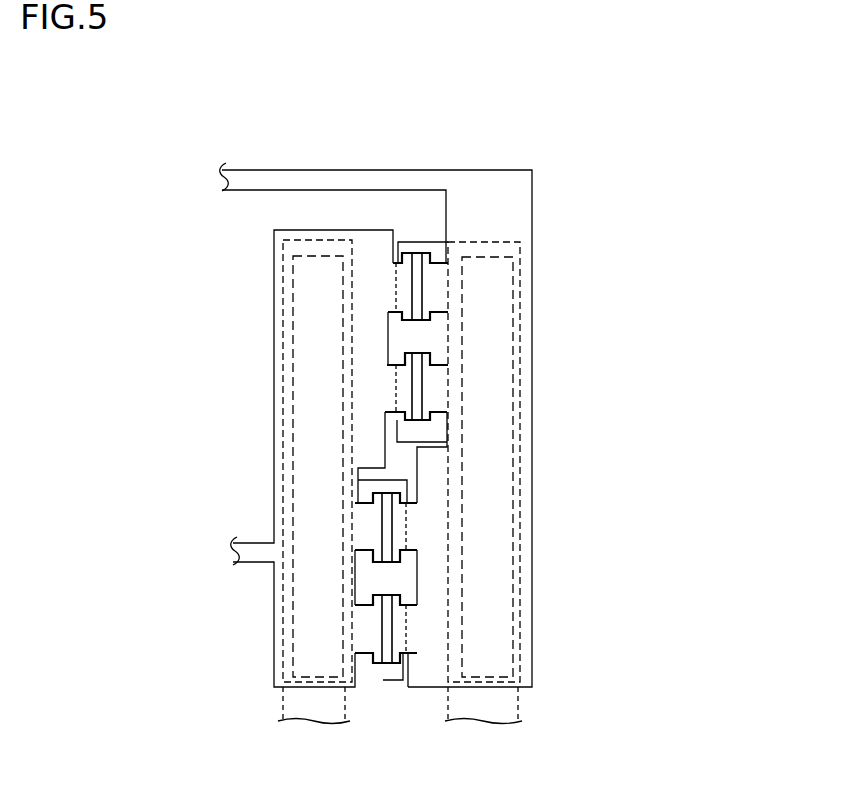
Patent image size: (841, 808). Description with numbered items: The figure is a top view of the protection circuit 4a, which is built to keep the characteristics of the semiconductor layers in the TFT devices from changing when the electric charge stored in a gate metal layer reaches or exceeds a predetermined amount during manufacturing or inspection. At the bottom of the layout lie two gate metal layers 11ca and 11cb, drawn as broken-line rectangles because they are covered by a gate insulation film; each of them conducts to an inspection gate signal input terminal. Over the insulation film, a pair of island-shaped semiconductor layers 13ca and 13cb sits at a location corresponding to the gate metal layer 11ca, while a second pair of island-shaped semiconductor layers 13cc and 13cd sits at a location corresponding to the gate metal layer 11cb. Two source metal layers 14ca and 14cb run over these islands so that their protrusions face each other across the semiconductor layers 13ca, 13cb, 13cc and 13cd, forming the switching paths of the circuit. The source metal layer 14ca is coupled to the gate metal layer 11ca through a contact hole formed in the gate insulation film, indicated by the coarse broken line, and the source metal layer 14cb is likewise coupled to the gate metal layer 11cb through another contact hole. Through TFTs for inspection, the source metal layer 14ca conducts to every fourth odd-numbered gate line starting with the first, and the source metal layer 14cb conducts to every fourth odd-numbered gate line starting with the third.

The protection circuit 4a is at (212, 112).
The source metal layer 14ca is at (354, 170).
The source metal layer 14cb is at (245, 542).
The semiconductor layer 13ca is at (417, 320).
The semiconductor layer 13cb is at (415, 418).
The semiconductor layer 13cc is at (387, 562).
The semiconductor layer 13cd is at (383, 665).
The gate metal layer 11ca is at (485, 721).
The gate metal layer 11cb is at (315, 721).